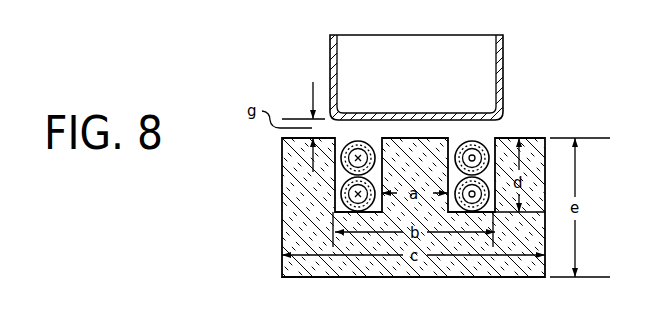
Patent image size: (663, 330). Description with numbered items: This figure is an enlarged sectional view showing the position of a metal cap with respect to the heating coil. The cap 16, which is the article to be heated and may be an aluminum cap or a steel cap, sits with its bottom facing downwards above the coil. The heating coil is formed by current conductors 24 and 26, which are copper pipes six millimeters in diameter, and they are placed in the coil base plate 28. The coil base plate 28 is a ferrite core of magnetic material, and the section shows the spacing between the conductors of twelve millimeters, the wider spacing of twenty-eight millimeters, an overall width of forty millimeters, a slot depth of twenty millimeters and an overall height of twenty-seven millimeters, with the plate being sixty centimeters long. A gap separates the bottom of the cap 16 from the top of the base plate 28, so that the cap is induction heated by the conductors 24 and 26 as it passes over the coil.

The cap 16 is at (508, 61).
The current conductor 24 is at (352, 170).
The current conductor 26 is at (472, 142).
The coil base plate 28 is at (452, 277).